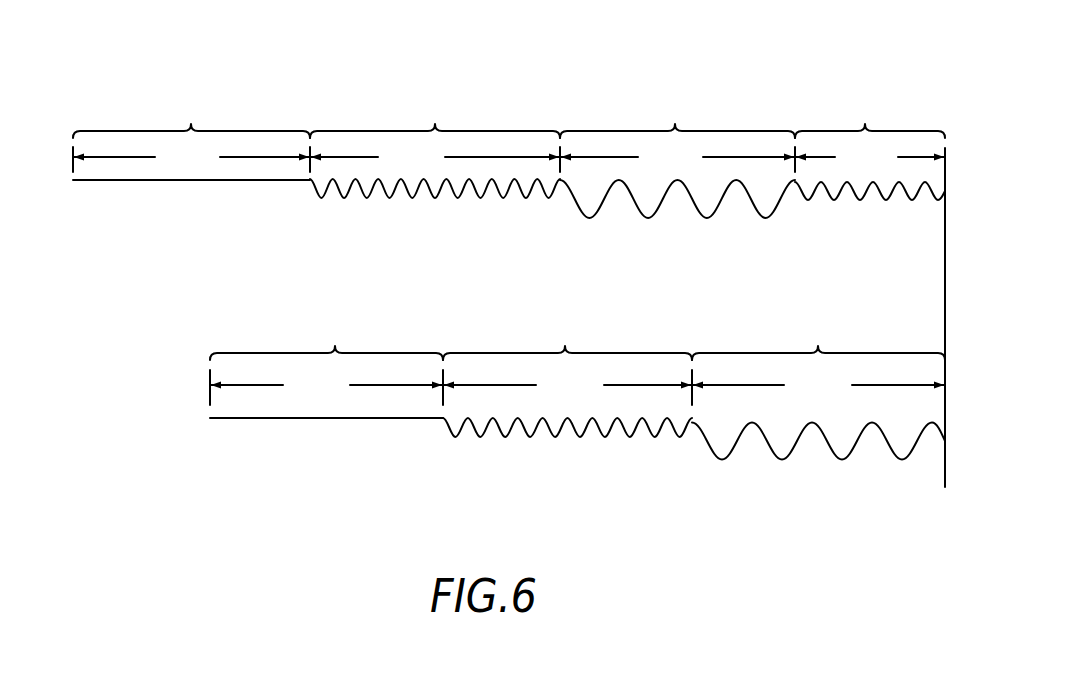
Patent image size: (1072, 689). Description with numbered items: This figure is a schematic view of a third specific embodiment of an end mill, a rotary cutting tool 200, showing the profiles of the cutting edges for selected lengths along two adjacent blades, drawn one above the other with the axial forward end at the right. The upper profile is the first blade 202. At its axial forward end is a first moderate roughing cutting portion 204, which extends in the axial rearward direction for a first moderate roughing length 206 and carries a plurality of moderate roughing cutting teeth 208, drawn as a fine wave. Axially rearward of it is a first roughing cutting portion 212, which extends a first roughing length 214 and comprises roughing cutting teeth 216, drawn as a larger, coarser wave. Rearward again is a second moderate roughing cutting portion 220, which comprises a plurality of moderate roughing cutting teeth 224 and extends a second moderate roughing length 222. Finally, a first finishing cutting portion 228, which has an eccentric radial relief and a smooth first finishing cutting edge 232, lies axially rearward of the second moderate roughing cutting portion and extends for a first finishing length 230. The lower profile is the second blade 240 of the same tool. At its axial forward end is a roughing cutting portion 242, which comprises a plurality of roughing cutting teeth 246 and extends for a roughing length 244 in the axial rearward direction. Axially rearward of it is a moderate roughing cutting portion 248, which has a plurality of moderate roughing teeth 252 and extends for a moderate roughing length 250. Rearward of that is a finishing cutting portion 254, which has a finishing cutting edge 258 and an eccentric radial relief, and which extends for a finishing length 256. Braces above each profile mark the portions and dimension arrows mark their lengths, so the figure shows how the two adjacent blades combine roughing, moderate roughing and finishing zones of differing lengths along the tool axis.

The rotary cutting tool 200 is at (984, 90).
The first blade 202 is at (947, 204).
The first moderate roughing cutting portion 204 is at (870, 116).
The first moderate roughing length 206 is at (870, 156).
The moderate roughing cutting teeth 208 is at (945, 185).
The first roughing cutting portion 212 is at (677, 116).
The first roughing length 214 is at (678, 158).
The roughing cutting teeth 216 is at (743, 187).
The second moderate roughing cutting portion 220 is at (435, 116).
The second moderate roughing length 222 is at (435, 158).
The moderate roughing cutting teeth 224 is at (497, 187).
The first finishing cutting portion 228 is at (191, 116).
The first finishing length 230 is at (191, 158).
The first finishing cutting edge 232 is at (173, 180).
The second blade 240 is at (947, 432).
The roughing cutting portion 242 is at (818, 337).
The roughing length 244 is at (818, 385).
The roughing cutting teeth 246 is at (862, 423).
The moderate roughing cutting portion 248 is at (567, 337).
The moderate roughing length 250 is at (568, 387).
The moderate roughing teeth 252 is at (657, 428).
The finishing cutting portion 254 is at (326, 337).
The finishing length 256 is at (326, 387).
The finishing cutting edge 258 is at (355, 418).